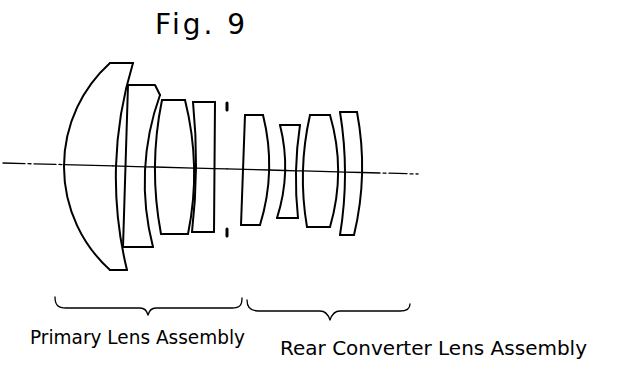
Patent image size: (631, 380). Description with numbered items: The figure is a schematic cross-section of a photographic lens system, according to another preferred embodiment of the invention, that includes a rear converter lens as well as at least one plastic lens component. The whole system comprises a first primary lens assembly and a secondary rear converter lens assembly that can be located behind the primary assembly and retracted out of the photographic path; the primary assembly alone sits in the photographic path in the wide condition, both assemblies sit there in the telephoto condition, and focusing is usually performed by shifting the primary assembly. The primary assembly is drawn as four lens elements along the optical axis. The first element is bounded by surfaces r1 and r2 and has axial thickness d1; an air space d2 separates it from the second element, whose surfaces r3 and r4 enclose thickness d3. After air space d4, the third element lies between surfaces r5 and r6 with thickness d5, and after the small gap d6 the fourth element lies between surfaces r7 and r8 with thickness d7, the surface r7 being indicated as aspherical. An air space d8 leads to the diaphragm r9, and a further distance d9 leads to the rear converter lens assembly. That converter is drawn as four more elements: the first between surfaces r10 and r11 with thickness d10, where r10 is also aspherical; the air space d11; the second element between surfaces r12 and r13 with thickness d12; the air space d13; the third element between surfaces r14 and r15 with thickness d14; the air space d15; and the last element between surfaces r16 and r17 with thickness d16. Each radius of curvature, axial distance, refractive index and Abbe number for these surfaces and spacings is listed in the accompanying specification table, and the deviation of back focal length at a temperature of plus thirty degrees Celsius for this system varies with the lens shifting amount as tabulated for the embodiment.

The radius of curvature r1 is at (88, 247).
The radius of curvature r2 is at (120, 256).
The radius of curvature r3 is at (123, 247).
The radius of curvature r4 is at (153, 238).
The radius of curvature r5 is at (163, 236).
The radius of curvature r6 is at (188, 235).
The radius of curvature r7 is at (193, 233).
The radius of curvature r8 is at (213, 233).
The diaphragm r9 is at (226, 237).
The radius of curvature r10 is at (245, 227).
The radius of curvature r11 is at (265, 218).
The radius of curvature r12 is at (277, 219).
The radius of curvature r13 is at (298, 218).
The radius of curvature r14 is at (307, 228).
The radius of curvature r15 is at (330, 228).
The radius of curvature r16 is at (354, 235).
The radius of curvature r17 is at (359, 221).
The axial distance d1 is at (88, 159).
The axial distance d2 is at (120, 166).
The axial distance d3 is at (139, 166).
The axial distance d4 is at (152, 168).
The axial distance d5 is at (174, 159).
The axial distance d6 is at (191, 167).
The axial distance d7 is at (204, 167).
The axial distance d8 is at (223, 158).
The axial distance d9 is at (234, 182).
The axial distance d10 is at (257, 164).
The axial distance d11 is at (276, 168).
The axial distance d12 is at (290, 168).
The axial distance d13 is at (300, 173).
The axial distance d14 is at (320, 162).
The axial distance d15 is at (342, 173).
The axial distance d16 is at (353, 173).